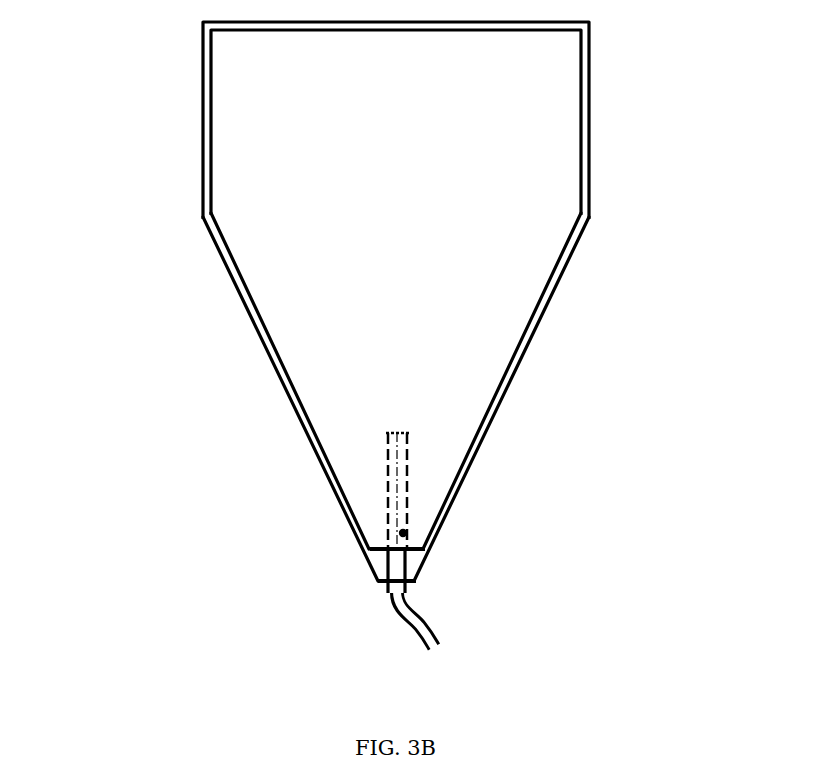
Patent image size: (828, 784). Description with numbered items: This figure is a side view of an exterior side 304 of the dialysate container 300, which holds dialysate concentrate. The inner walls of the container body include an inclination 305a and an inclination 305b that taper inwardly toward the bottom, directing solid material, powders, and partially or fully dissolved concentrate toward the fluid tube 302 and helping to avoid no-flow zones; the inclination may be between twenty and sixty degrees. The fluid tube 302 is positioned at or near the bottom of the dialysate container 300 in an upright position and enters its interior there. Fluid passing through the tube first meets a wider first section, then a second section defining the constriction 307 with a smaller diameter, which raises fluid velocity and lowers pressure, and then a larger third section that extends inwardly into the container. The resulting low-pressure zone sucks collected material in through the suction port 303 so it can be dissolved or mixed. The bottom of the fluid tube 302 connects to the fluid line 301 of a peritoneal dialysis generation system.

The dialysate container 300 is at (136, 163).
The fluid line 301 is at (433, 626).
The fluid tube 302 is at (397, 485).
The suction port 303 is at (403, 533).
The exterior side 304 is at (518, 170).
The inclination 305a is at (307, 440).
The inclination 305b is at (490, 425).
The constriction 307 is at (386, 570).